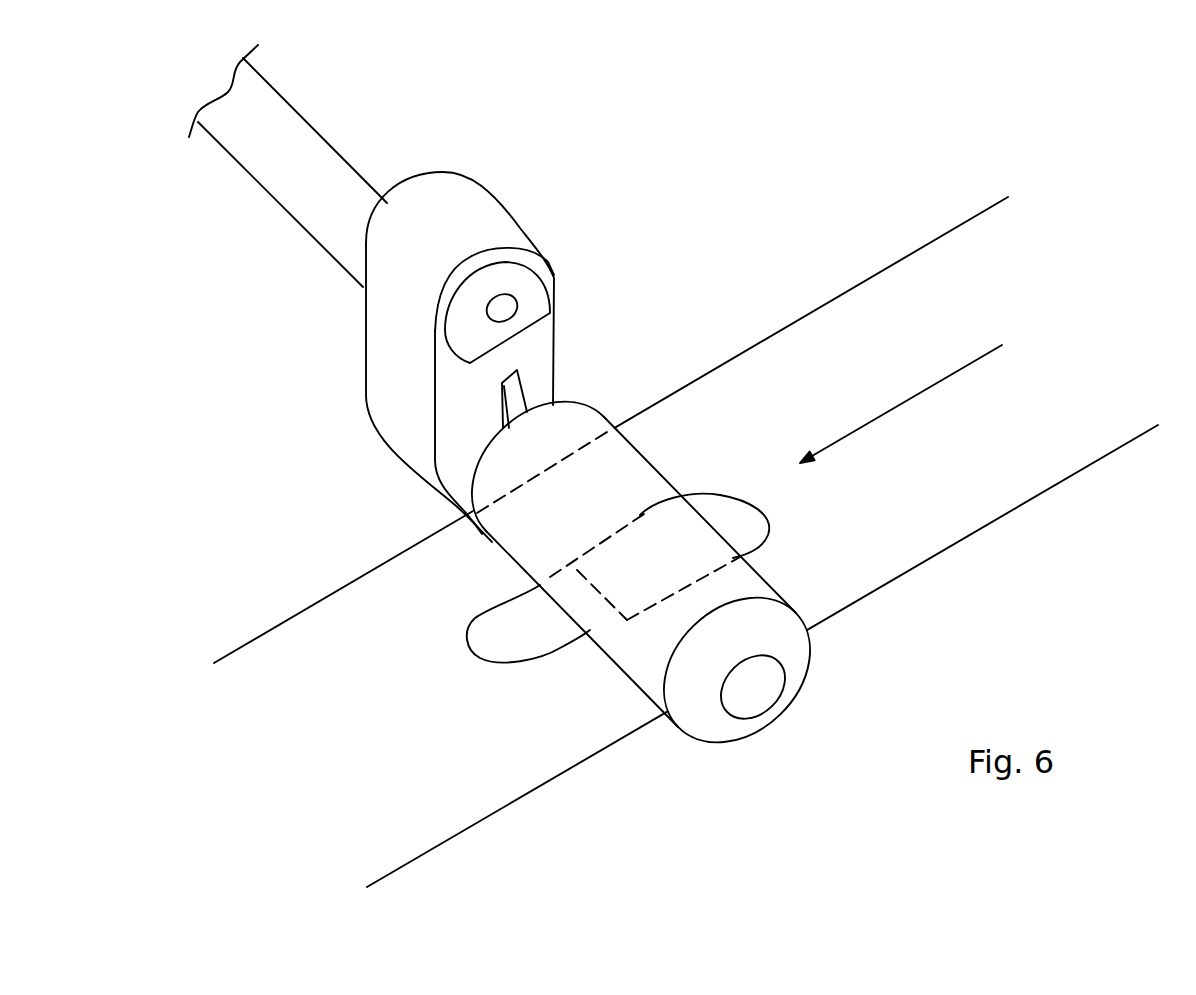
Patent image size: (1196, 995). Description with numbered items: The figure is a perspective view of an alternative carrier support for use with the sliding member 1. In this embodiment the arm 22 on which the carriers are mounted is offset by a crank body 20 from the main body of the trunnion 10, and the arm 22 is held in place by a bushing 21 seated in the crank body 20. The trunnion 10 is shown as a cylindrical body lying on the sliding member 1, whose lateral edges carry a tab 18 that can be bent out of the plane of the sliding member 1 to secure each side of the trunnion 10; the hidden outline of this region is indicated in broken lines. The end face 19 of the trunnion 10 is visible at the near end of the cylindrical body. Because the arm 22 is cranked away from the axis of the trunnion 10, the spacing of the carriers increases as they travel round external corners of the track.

The sliding member 1 is at (1033, 426).
The trunnion 10 is at (758, 633).
The tab 18 is at (622, 568).
The end face of carriage 19 is at (718, 732).
The crank body 20 is at (408, 413).
The bushing 21 is at (525, 300).
The arm 22 is at (335, 145).